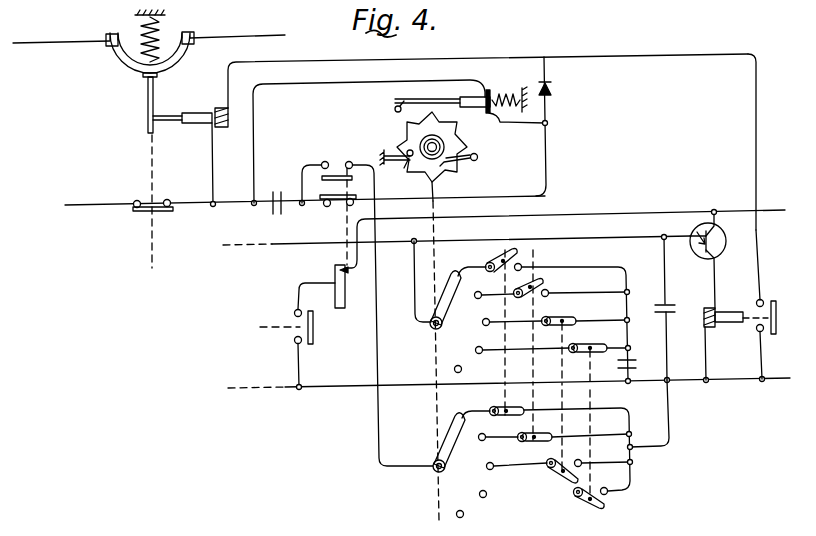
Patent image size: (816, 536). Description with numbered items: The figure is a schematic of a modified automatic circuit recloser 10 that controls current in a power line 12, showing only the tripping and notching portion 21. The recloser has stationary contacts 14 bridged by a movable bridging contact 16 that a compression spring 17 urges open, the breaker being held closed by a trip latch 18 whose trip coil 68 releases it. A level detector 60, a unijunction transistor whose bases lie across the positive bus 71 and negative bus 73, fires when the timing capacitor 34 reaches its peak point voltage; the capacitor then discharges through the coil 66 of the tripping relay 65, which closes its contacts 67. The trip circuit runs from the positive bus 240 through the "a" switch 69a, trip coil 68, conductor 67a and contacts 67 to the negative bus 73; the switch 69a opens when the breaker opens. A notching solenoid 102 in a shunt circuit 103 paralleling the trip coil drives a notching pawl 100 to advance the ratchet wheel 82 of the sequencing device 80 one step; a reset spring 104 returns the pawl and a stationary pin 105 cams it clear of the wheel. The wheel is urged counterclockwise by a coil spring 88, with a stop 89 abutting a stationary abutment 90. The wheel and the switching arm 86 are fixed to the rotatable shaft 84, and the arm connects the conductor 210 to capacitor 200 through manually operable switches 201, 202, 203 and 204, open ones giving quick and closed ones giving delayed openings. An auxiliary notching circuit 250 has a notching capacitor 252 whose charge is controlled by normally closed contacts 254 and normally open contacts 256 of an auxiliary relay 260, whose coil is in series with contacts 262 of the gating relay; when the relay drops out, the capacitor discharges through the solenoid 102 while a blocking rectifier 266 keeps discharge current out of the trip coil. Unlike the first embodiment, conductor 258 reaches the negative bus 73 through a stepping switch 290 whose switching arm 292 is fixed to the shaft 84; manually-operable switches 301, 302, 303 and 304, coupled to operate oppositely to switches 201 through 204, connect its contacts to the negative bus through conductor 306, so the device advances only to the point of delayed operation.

The automatic circuit recloser 10 is at (134, 103).
The power line 12 is at (22, 43).
The stationary contacts 14 is at (110, 34).
The movable bridging contact 16 is at (176, 57).
The compression spring 17 is at (158, 32).
The trip latch 18 is at (158, 112).
The tripping and notching portion 21 is at (254, 307).
The timing capacitor 34 is at (676, 309).
The level detector 60 is at (725, 245).
The tripping relay 65 is at (739, 312).
The coil of tripping relay 66 is at (715, 328).
The contacts of tripping relay 67 is at (776, 305).
The conductor 67a is at (755, 108).
The trip coil 68 is at (222, 122).
The "a" switch 69a is at (140, 212).
The positive bus 71 is at (597, 212).
The negative bus 73 is at (322, 388).
The sequencing device 80 is at (462, 132).
The ratchet wheel 82 is at (455, 166).
The rotatable shaft 84 is at (435, 208).
The switching arm 86 is at (444, 304).
The coil spring 88 is at (443, 131).
The stop 89 is at (404, 146).
The stationary abutment 90 is at (405, 168).
The notching pawl 100 is at (442, 95).
The notching solenoid 102 is at (490, 92).
The shunt circuit 103 is at (281, 84).
The reset spring 104 is at (511, 121).
The stationary pin 105 is at (396, 108).
The capacitor 200 is at (639, 362).
The manually operable switch 201 is at (515, 252).
The manually operable switch 202 is at (545, 283).
The manually operable switch 203 is at (570, 318).
The manually operable switch 204 is at (585, 343).
The conductor 210 is at (409, 245).
The positive bus 240 is at (79, 204).
The auxiliary notching circuit 250 is at (500, 198).
The notching capacitor 252 is at (275, 190).
The normally closed contacts 254 is at (330, 210).
The normally open contacts 256 is at (335, 162).
The conductor 258 is at (375, 208).
The auxiliary relay 260 is at (346, 296).
The normally open contacts 262 is at (314, 336).
The blocking rectifier 266 is at (554, 91).
The stepping switch 290 is at (474, 478).
The switching arm 292 is at (447, 443).
The manually-operable switch 301 is at (494, 406).
The manually-operable switch 302 is at (546, 441).
The manually-operable switch 303 is at (550, 473).
The manually-operable switch 304 is at (586, 504).
The conductor 306 is at (670, 420).